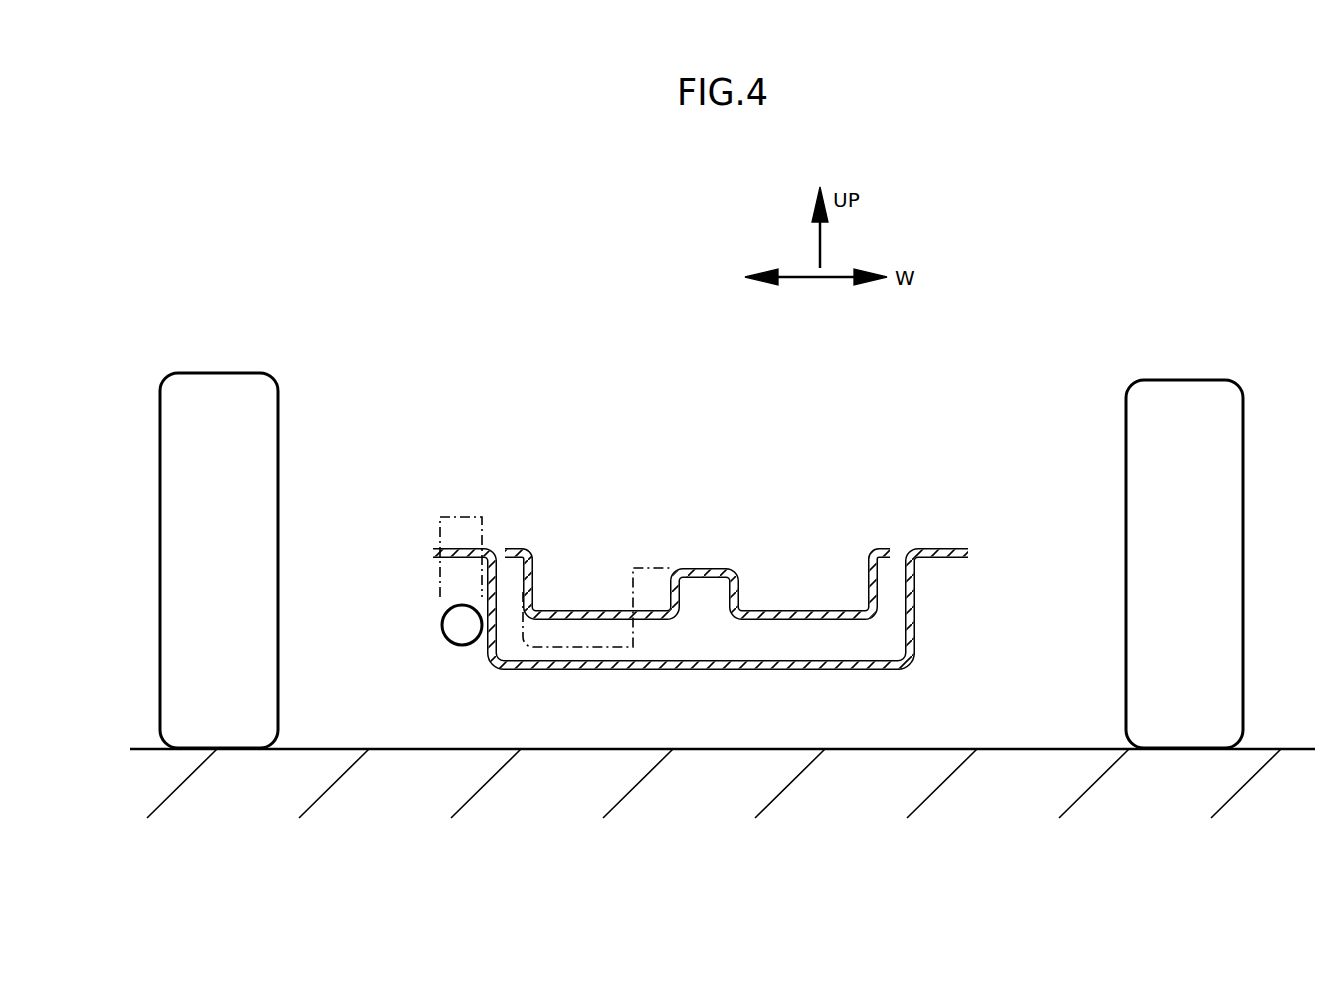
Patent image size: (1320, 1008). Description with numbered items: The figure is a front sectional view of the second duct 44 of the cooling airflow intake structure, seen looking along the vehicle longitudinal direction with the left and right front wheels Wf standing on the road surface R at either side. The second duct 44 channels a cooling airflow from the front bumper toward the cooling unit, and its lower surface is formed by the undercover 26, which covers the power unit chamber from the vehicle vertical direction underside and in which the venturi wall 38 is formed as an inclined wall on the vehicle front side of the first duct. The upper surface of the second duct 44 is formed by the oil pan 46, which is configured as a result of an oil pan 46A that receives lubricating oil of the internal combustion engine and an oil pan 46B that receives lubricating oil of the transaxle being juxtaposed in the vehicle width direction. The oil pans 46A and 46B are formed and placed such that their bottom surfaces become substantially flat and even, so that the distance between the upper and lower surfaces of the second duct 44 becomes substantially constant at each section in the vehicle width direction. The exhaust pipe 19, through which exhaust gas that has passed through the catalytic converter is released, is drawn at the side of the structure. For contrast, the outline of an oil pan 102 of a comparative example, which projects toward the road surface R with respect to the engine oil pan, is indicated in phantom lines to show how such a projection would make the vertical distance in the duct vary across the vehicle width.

The exhaust pipe 19 is at (458, 641).
The undercover 26 is at (882, 673).
The venturi wall 38 is at (582, 671).
The second duct 44 is at (757, 643).
The oil pan 46 is at (697, 516).
The oil pan 46A is at (602, 610).
The oil pan 46B is at (797, 540).
The oil pan 102 is at (626, 649).
The front wheel Wf is at (263, 445).
The road surface R is at (993, 745).